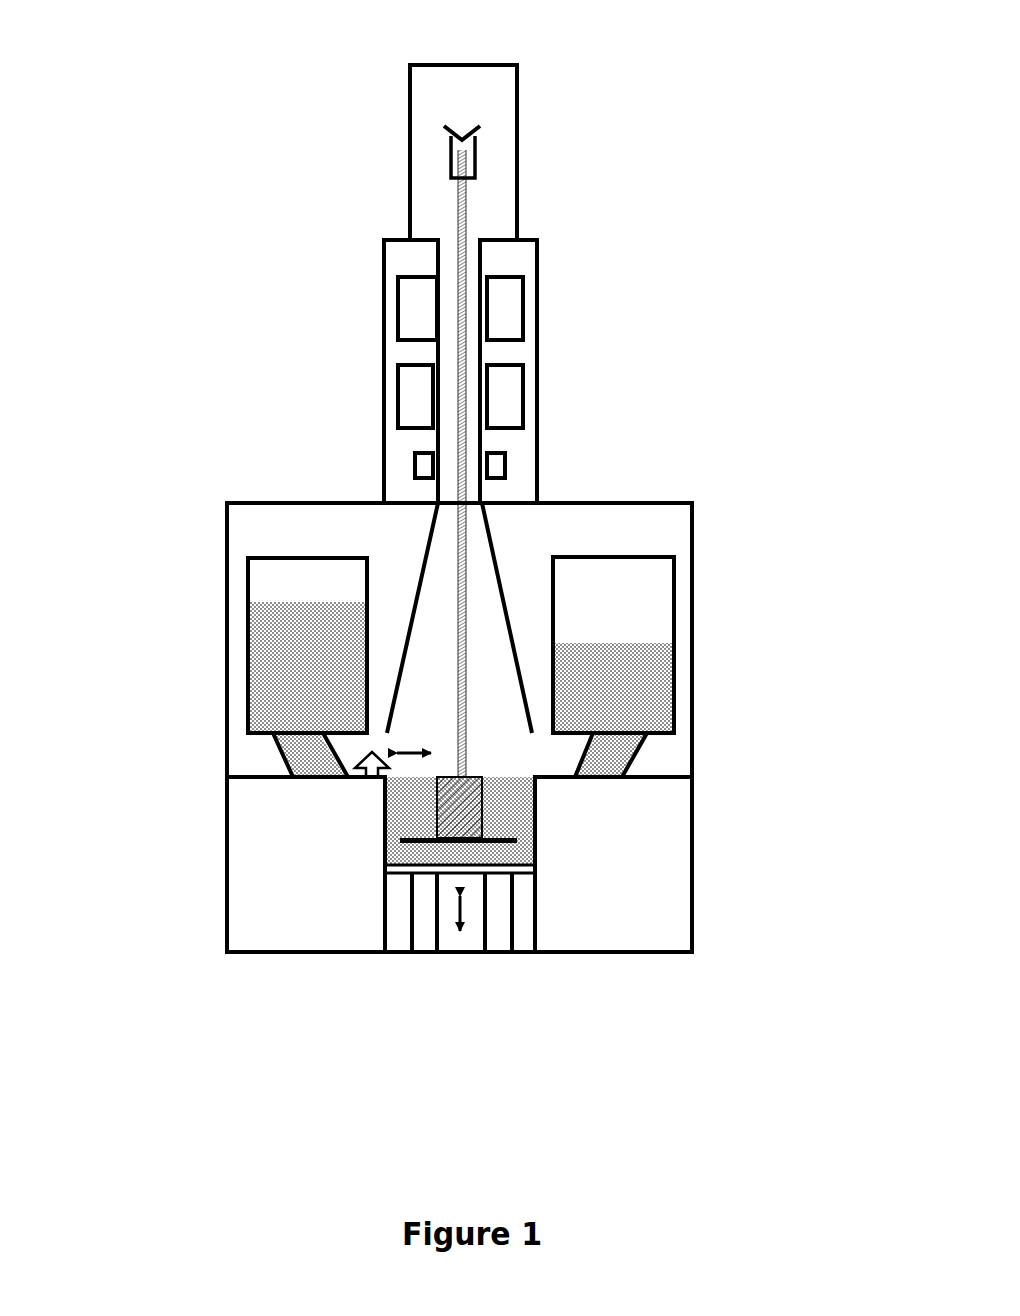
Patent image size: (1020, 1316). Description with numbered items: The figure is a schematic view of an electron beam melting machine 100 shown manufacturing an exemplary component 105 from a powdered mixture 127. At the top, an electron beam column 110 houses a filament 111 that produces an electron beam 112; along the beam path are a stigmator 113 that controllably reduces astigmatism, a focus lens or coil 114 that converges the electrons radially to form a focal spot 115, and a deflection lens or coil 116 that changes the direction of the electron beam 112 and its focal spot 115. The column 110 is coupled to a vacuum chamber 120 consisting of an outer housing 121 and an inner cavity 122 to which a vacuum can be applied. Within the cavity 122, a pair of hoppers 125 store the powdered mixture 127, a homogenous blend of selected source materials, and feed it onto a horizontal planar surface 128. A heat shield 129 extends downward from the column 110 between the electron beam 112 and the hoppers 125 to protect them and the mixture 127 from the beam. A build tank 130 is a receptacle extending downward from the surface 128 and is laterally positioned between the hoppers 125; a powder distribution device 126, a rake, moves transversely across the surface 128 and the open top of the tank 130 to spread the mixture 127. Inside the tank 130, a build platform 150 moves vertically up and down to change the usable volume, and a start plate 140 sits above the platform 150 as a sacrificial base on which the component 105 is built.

The EBM machine 100 is at (714, 49).
The component 105 is at (482, 808).
The electron beam column 110 is at (345, 478).
The filament 111 is at (478, 128).
The electron beam 112 is at (467, 558).
The stigmator 113 is at (525, 308).
The focus lens or coil 114 is at (525, 390).
The focal spot 115 is at (470, 771).
The deflection lens or coil 116 is at (505, 468).
The vacuum chamber 120 is at (714, 496).
The outer housing 121 is at (227, 592).
The inner cavity 122 is at (254, 520).
The hoppers 125 is at (250, 668).
The powder distribution device 126 is at (362, 780).
The powdered mixture 127 is at (398, 815).
The horizontal planar surface 128 is at (240, 772).
The heat shield 129 is at (420, 568).
The build tank 130 is at (358, 867).
The start plate 140 is at (505, 843).
The build platform 150 is at (398, 878).